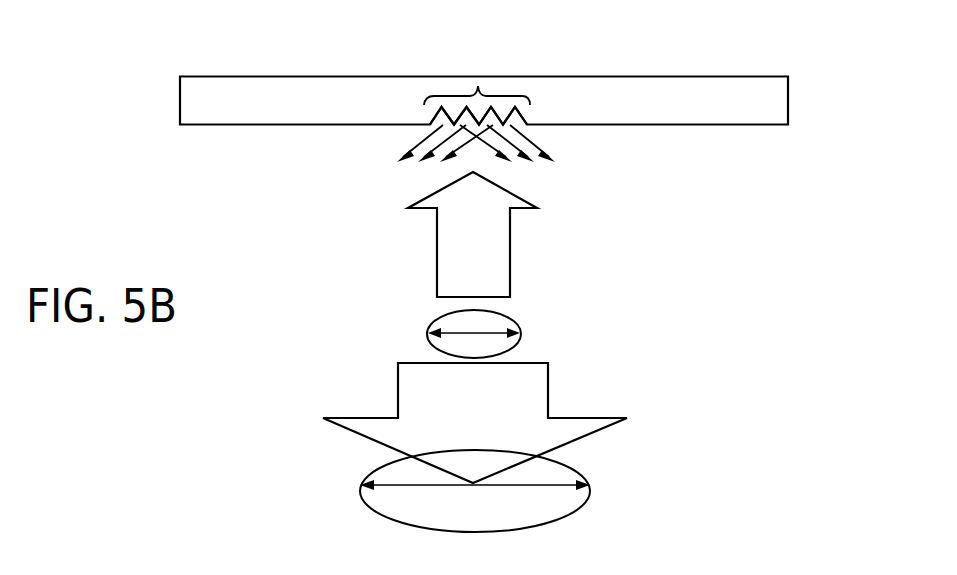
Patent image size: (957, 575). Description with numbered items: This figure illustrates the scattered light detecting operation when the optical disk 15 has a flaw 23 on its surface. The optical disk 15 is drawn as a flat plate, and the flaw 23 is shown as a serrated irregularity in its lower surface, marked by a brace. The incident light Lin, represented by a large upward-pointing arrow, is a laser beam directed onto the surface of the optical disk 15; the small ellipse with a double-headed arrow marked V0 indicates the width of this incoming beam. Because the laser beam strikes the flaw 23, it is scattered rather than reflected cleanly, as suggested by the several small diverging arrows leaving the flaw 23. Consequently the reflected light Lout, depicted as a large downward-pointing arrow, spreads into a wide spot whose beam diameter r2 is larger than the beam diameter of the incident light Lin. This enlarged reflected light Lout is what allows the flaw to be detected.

The optical disk 15 is at (777, 100).
The flaw 23 is at (478, 86).
The incident light Lin is at (487, 243).
The spot size of incident light V0 is at (473, 333).
The reflected light Lout is at (528, 393).
The beam diameter r2 is at (417, 485).